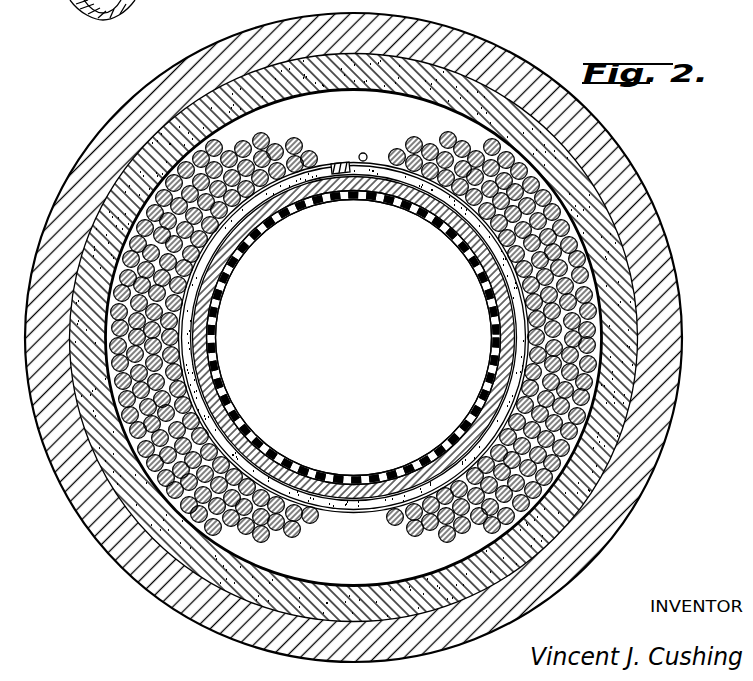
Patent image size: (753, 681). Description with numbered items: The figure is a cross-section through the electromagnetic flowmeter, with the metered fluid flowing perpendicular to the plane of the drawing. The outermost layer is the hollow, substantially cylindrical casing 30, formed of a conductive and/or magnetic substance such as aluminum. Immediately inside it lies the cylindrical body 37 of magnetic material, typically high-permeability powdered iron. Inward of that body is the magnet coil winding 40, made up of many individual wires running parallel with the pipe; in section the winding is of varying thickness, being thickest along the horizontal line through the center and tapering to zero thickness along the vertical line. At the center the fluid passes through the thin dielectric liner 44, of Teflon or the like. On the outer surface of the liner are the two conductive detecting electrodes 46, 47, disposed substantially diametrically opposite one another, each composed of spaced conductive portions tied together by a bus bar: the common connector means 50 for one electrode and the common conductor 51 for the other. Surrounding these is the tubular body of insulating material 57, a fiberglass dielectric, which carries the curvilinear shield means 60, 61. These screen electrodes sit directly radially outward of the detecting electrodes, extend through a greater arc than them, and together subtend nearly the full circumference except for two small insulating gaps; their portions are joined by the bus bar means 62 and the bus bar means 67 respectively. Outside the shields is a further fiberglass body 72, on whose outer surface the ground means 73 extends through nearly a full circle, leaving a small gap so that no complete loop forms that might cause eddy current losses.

The outermost casing 30 is at (485, 33).
The cylindrical body 37 is at (318, 590).
The magnet coil winding 40 is at (282, 145).
The liner 44 is at (335, 477).
The detecting electrode 46 is at (212, 325).
The detecting electrode 47 is at (492, 337).
The common connector means 50 is at (254, 230).
The common conductor 51 is at (433, 230).
The body of insulating material 57 is at (277, 463).
The shield means 60 is at (200, 288).
The shield means 61 is at (500, 282).
The bus bar means 62 is at (320, 178).
The bus bar means 67 is at (366, 176).
The body of insulating material 72 is at (351, 172).
The ground means 73 is at (335, 166).